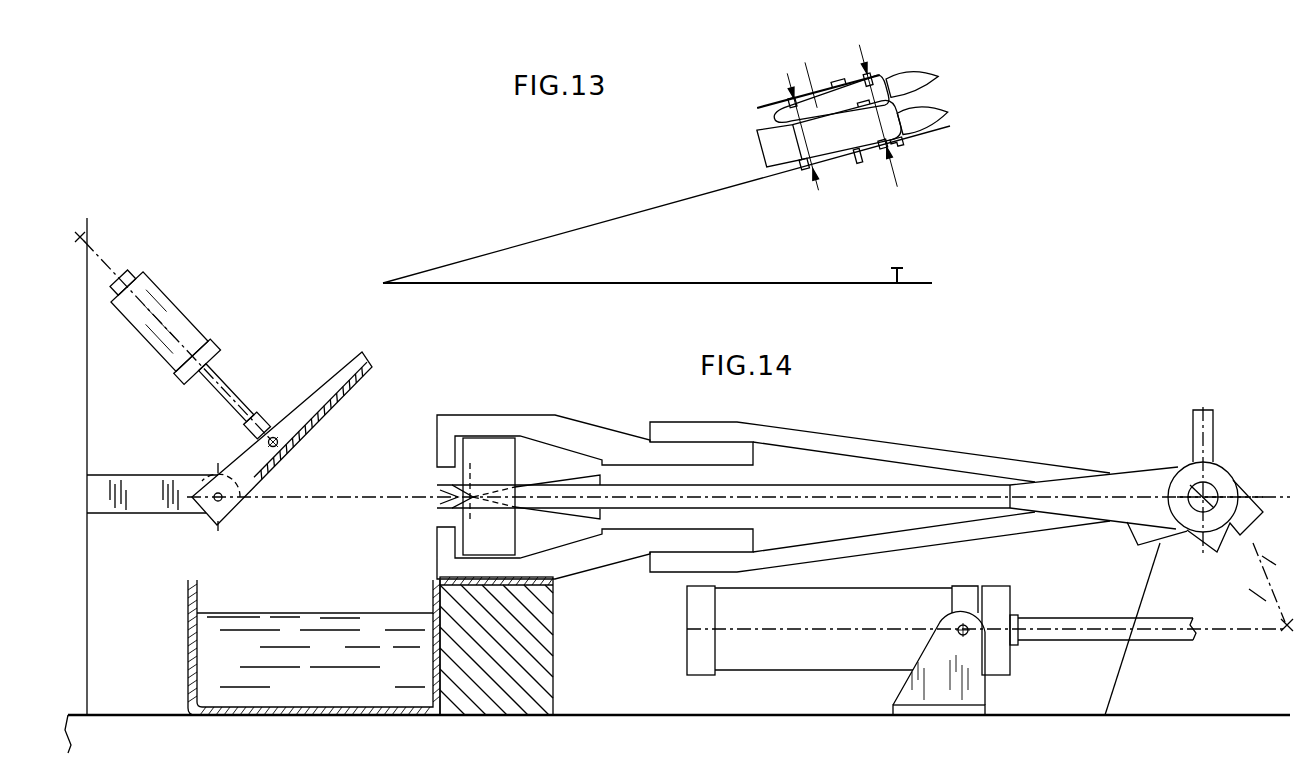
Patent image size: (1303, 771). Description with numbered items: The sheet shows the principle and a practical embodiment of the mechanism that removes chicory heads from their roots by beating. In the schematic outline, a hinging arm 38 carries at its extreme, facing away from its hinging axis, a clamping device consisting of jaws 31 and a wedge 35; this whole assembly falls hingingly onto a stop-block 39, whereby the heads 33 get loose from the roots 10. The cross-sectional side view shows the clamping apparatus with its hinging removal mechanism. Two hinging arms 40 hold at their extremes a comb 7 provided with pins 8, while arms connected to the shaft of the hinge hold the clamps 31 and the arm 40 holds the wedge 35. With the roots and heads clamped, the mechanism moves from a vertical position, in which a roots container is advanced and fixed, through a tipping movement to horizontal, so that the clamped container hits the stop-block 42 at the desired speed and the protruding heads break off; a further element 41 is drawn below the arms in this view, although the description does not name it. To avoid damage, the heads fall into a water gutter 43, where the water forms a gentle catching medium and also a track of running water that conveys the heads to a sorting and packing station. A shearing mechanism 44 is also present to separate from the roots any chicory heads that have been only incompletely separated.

In FIG. 14, the comb 7 is at (452, 500).
In FIG. 14, the pins 8 is at (475, 495).
In FIG. 13, the roots 10 is at (826, 86).
In FIG. 13, the jaws 31 is at (887, 150).
In FIG. 14, the jaws 31 is at (447, 440).
In FIG. 13, the heads 33 is at (927, 81).
In FIG. 13, the wedge 35 is at (756, 138).
In FIG. 14, the wedge 35 is at (591, 479).
In FIG. 13, the hinging arm 38 is at (603, 222).
In FIG. 13, the stop-block 39 is at (910, 265).
In FIG. 14, the hinging arms 40 is at (790, 494).
In FIG. 14, the hydraulic cylinder 41 is at (1020, 658).
In FIG. 14, the stop-block 42 is at (520, 650).
In FIG. 14, the water gutter 43 is at (220, 648).
In FIG. 14, the shearing mechanism 44 is at (281, 398).